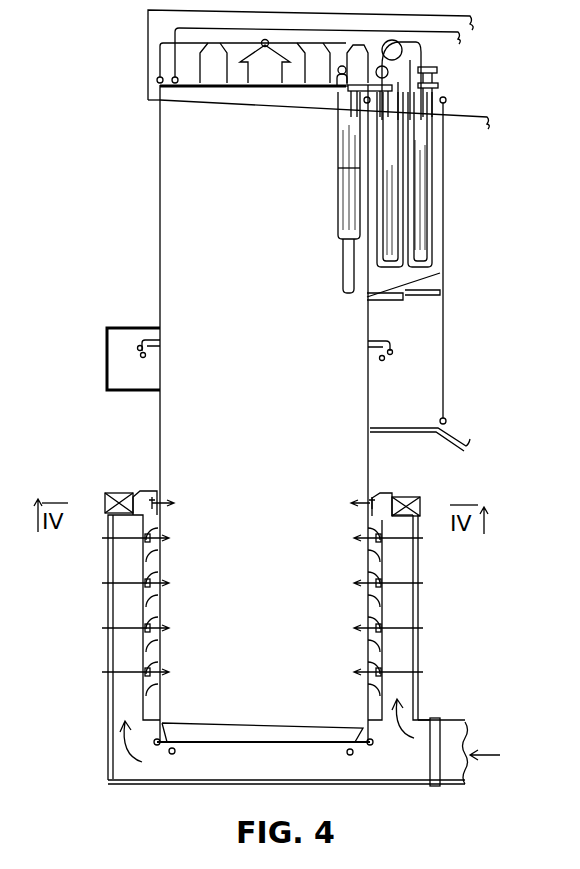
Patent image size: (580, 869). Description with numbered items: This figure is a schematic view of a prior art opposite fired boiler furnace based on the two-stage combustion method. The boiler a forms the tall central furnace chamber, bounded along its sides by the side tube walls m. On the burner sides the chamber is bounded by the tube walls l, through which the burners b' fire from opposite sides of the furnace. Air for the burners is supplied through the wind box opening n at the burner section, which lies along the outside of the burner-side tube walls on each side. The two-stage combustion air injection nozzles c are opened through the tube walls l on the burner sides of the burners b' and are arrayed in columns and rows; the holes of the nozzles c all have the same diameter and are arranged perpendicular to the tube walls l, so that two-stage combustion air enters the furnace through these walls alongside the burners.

The boiler a is at (160, 173).
The side tube walls m is at (290, 327).
The tube walls on the burner sides l is at (160, 367).
The wind box opening at the burner section n is at (113, 603).
The two-stage combustion air injection nozzles c is at (158, 500).
The burners b' is at (262, 603).